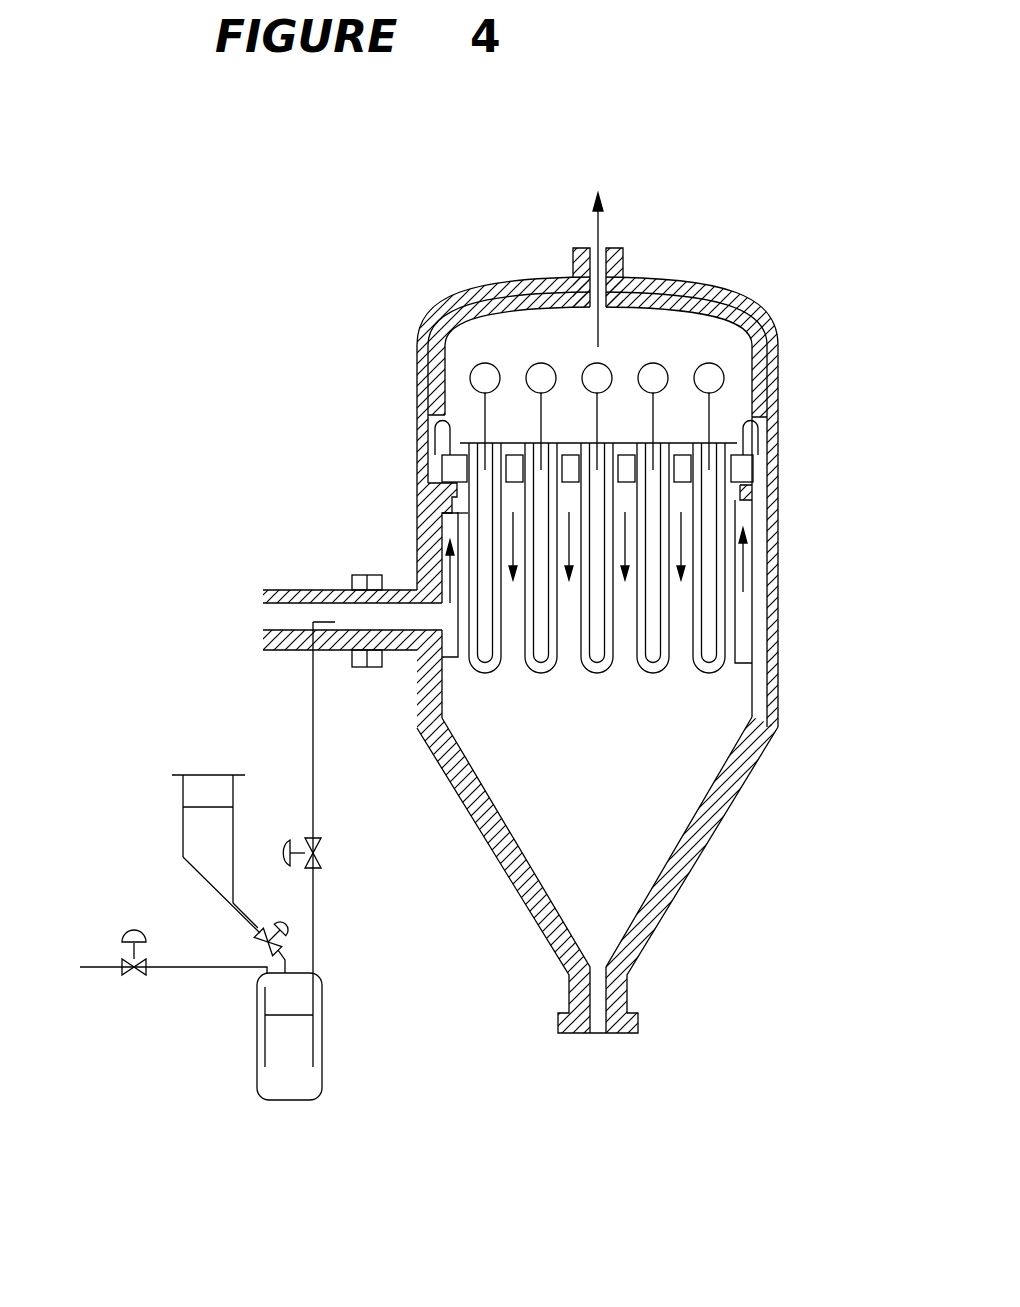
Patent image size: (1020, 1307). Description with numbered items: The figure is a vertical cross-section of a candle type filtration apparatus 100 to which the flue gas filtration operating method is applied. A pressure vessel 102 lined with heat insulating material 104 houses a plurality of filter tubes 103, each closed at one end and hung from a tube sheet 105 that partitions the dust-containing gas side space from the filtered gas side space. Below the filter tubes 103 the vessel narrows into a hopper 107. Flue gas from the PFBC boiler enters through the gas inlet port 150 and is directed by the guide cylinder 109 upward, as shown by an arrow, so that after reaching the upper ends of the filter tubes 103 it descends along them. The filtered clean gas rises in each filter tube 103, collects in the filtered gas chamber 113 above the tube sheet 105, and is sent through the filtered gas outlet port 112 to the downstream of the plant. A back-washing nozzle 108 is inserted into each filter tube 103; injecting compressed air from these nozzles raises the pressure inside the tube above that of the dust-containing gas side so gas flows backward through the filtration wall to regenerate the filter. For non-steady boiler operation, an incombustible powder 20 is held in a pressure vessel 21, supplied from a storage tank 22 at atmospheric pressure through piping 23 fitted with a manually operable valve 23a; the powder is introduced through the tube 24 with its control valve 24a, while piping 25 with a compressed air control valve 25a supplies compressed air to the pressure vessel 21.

The candle type filtration apparatus 100 is at (510, 278).
The pressure vessel 102 is at (778, 573).
The filter tube 103 is at (722, 528).
The heat insulating material 104 is at (680, 860).
The tube sheet 105 is at (455, 468).
The hopper 107 is at (657, 780).
The back-washing nozzle 108 is at (483, 420).
The guide cylinder 109 is at (735, 632).
The filtered gas outlet port 112 is at (606, 235).
The filtered gas chamber 113 is at (663, 345).
The gas inlet port 150 is at (393, 622).
The incombustible powder 20 is at (203, 830).
The pressure vessel 21 is at (323, 993).
The storage tank 22 is at (183, 796).
The piping 23 is at (238, 907).
The manually operable valve 23a is at (260, 937).
The tube for introducing the incombustible powder 24 is at (313, 903).
The control valve 24a is at (322, 856).
The piping for compressed air 25 is at (192, 969).
The compressed air control valve 25a is at (128, 973).